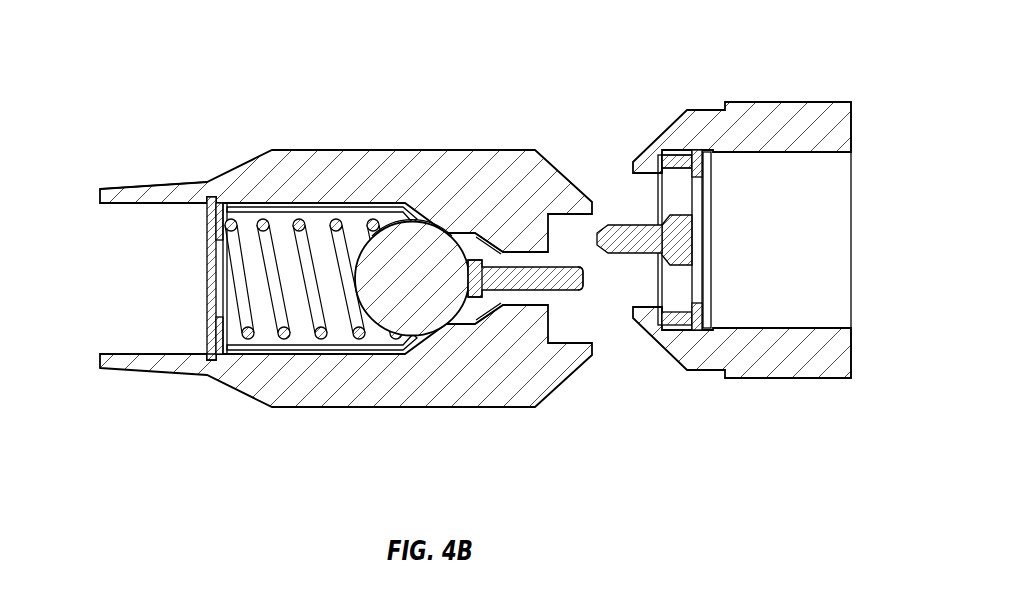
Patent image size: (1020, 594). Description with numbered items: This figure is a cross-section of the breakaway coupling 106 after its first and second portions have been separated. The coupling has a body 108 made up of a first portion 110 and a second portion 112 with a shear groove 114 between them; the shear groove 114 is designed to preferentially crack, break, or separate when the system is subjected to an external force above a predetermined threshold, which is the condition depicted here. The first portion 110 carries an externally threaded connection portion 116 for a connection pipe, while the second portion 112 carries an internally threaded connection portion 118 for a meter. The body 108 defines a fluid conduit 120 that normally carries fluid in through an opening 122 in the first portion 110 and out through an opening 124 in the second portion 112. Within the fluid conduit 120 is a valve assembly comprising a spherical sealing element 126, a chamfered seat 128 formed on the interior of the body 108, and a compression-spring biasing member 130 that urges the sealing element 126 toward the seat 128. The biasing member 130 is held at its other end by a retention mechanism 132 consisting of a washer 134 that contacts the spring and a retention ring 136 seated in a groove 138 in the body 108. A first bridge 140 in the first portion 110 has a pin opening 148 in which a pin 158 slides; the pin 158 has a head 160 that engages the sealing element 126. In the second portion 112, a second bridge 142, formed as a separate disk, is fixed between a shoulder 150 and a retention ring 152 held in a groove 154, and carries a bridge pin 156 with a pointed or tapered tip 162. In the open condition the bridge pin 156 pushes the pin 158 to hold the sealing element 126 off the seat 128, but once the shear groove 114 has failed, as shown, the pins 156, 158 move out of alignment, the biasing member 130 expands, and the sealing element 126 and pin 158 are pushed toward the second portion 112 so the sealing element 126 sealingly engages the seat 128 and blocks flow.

The breakaway coupling 106 is at (549, 47).
The body 108 is at (529, 413).
The first portion 110 is at (318, 147).
The second portion 112 is at (784, 99).
The shear groove 114 is at (613, 155).
The connection portion 116 is at (128, 182).
The connection portion 118 is at (840, 166).
The fluid conduit 120 is at (336, 350).
The opening 122 is at (104, 280).
The opening 124 is at (840, 255).
The sealing element 126 is at (400, 247).
The seat 128 is at (432, 229).
The biasing member 130 is at (262, 221).
The retention mechanism 132 is at (210, 352).
The washer 134 is at (216, 357).
The retention ring 136 is at (211, 357).
The groove 138 is at (207, 357).
The first bridge 140 is at (516, 320).
The second bridge 142 is at (677, 161).
The pin opening 148 is at (526, 262).
The shoulder 150 is at (667, 322).
The retention ring 152 is at (697, 332).
The groove 154 is at (702, 323).
The bridge pin 156 is at (616, 248).
The pin 158 is at (490, 296).
The head 160 is at (468, 240).
The tip 162 is at (596, 240).